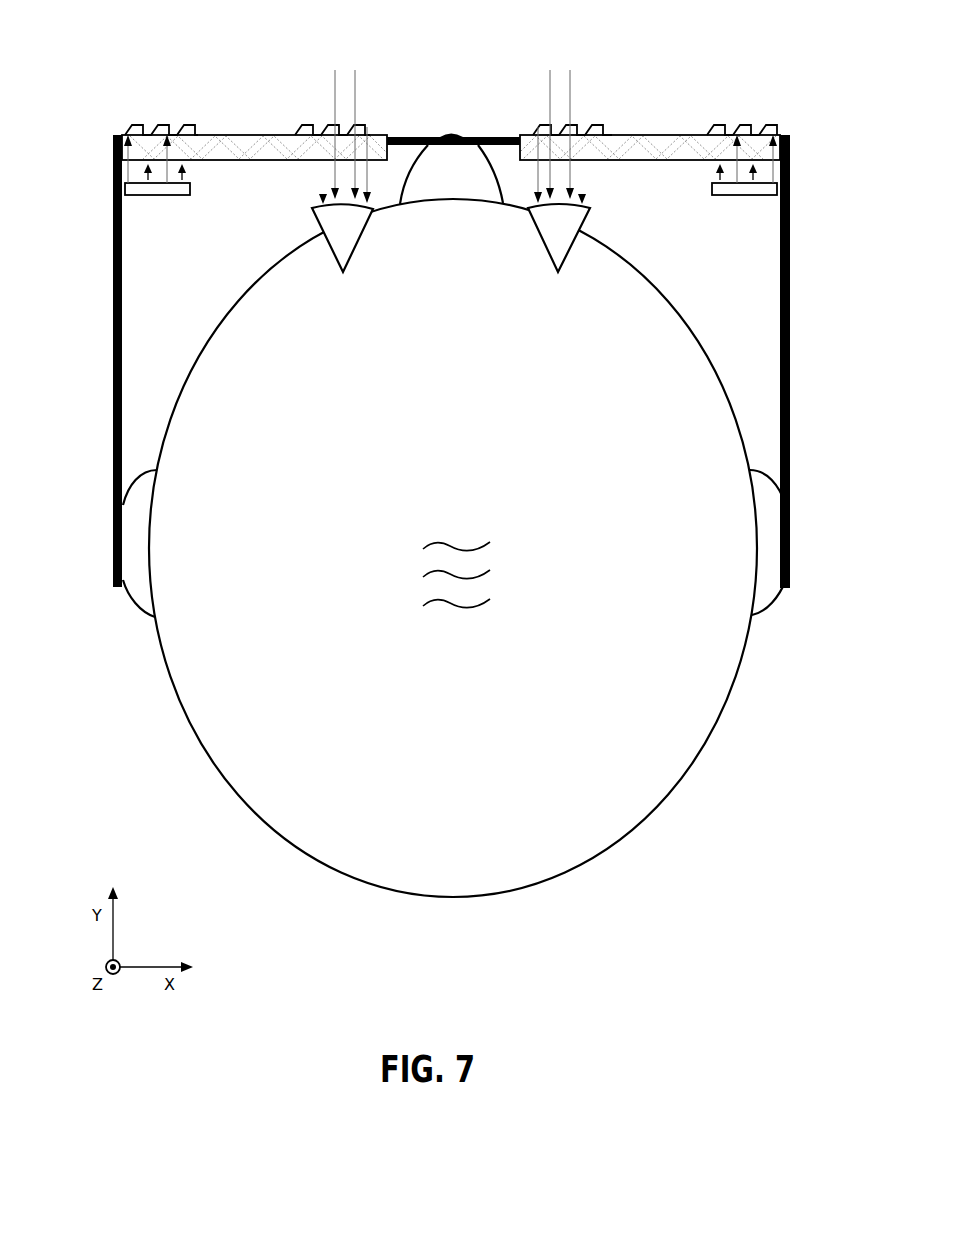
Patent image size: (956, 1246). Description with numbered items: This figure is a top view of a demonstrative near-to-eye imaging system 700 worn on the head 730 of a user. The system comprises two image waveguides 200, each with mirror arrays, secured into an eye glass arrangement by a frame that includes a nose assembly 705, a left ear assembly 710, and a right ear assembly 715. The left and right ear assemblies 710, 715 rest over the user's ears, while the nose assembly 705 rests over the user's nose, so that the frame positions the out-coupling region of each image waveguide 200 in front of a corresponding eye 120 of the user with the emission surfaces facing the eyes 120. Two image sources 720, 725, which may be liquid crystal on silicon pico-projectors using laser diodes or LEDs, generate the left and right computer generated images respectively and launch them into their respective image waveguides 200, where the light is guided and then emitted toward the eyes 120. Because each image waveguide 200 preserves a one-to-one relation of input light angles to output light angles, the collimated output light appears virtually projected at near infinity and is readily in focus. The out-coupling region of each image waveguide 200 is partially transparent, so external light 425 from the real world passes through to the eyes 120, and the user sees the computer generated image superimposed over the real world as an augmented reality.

The near-to-eye imaging system 700 is at (130, 79).
The image waveguide 200 is at (250, 135).
The external light 425 is at (333, 70).
The nose assembly 705 is at (494, 137).
The eye 120 is at (350, 262).
The image source 720 is at (172, 195).
The image source 725 is at (725, 195).
The left ear assembly 710 is at (112, 360).
The right ear assembly 715 is at (790, 362).
The head 730 is at (466, 754).